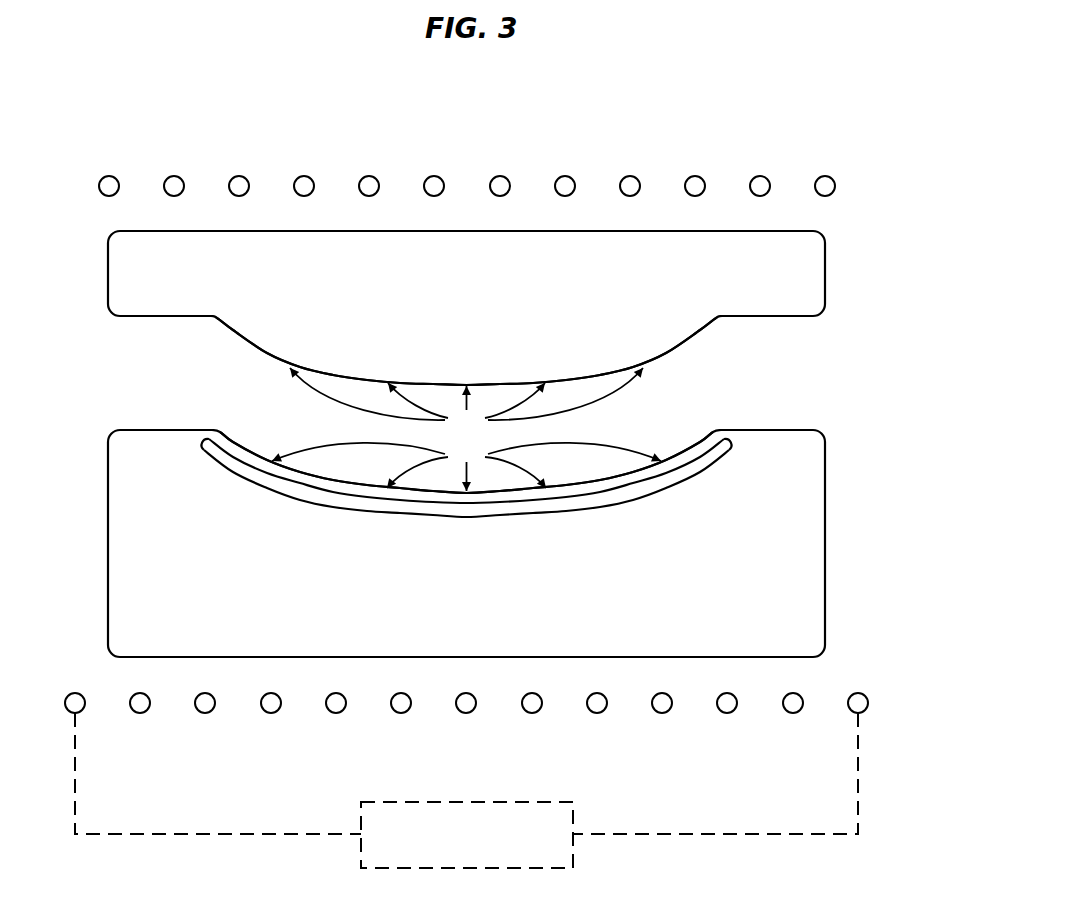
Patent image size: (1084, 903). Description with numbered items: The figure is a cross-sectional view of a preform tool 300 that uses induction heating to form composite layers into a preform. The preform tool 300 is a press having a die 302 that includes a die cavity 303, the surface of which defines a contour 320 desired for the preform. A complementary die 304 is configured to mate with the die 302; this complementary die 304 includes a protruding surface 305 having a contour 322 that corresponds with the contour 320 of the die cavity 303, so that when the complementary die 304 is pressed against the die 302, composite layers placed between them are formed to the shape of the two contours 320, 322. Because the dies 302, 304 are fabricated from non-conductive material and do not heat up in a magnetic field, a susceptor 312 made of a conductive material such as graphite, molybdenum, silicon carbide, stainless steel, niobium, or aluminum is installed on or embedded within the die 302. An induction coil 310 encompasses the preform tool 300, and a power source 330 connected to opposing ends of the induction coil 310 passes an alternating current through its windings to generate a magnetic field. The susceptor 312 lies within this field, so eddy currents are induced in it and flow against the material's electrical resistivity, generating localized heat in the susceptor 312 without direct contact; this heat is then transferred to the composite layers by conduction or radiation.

The preform tool 300 is at (121, 119).
The die 302 is at (804, 430).
The die cavity 303 is at (661, 427).
The complementary die 304 is at (804, 231).
The protruding surface 305 is at (259, 361).
The induction coil 310 is at (304, 176).
The susceptor 312 is at (568, 516).
The contour 320 is at (466, 466).
The contour 322 is at (466, 398).
The power source 330 is at (573, 868).